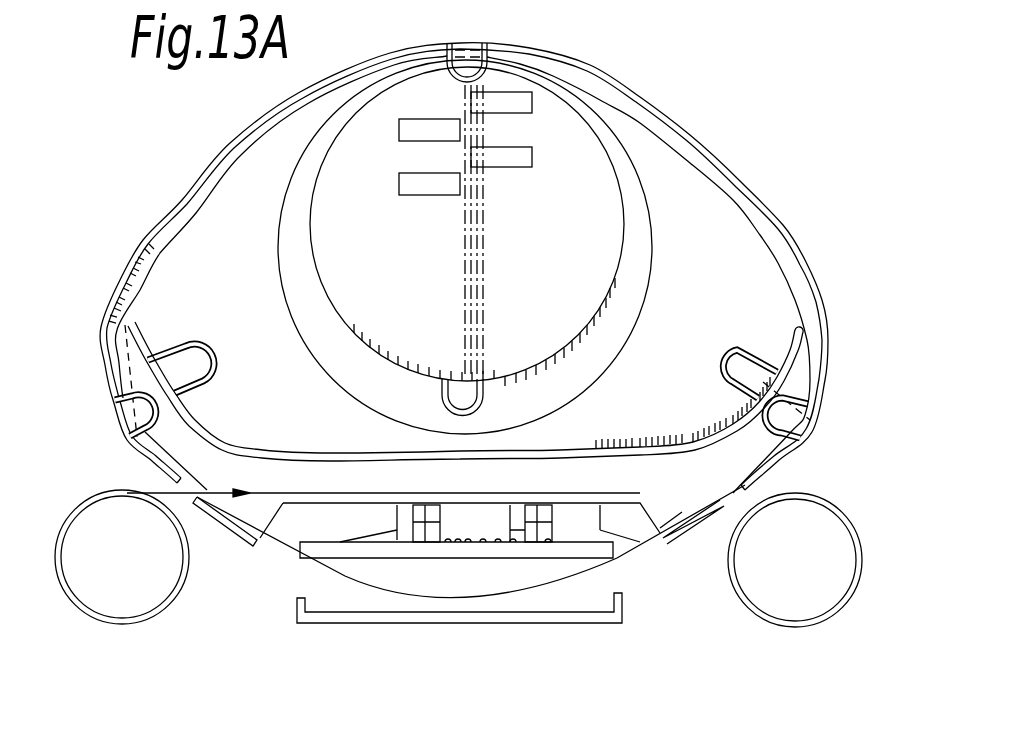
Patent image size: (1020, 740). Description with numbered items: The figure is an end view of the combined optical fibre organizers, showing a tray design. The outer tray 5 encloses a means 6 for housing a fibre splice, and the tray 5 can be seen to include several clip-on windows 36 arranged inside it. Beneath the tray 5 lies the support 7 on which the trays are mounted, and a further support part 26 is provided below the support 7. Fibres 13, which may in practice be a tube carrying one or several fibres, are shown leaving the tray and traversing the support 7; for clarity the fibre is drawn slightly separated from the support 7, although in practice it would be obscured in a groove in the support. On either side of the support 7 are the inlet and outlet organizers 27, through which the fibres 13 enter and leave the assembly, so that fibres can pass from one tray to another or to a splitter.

The tray 5 is at (173, 210).
The means for housing a fibre splice 6 is at (552, 460).
The support 7 is at (618, 556).
The fibres 13 is at (652, 246).
The further support part 26 is at (297, 610).
The inlet and outlet organizers 27 is at (836, 530).
The clip-on windows 36 is at (404, 183).